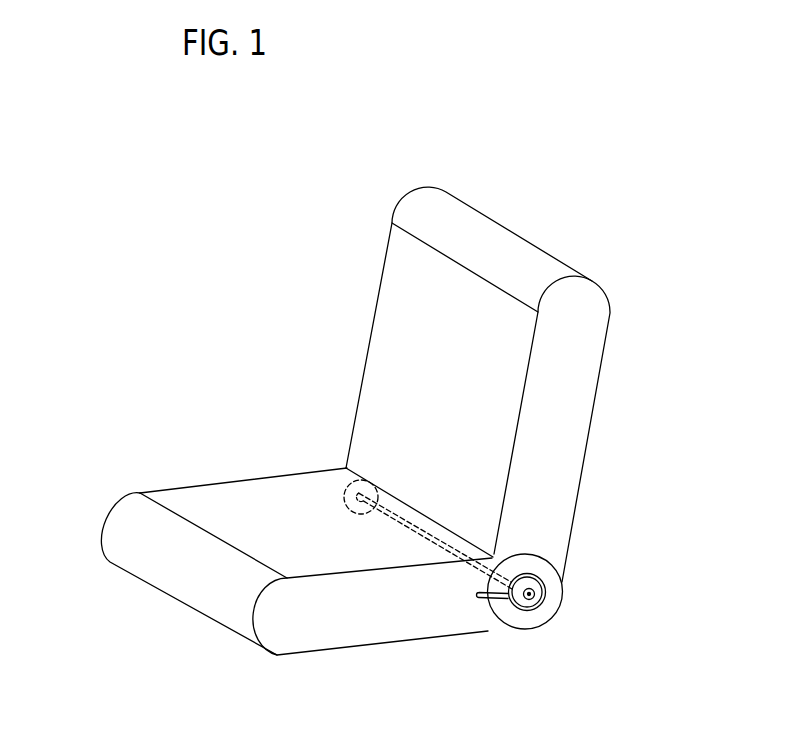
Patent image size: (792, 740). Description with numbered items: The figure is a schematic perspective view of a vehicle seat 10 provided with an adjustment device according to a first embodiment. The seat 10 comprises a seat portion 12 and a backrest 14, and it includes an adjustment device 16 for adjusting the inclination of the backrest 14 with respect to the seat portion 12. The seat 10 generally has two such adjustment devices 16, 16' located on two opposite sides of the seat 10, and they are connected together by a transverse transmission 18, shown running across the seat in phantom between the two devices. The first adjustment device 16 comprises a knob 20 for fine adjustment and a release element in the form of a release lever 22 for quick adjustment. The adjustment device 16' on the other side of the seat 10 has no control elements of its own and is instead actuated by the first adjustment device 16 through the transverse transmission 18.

The seat 10 is at (710, 247).
The seat portion 12 is at (231, 478).
The backrest 14 is at (375, 297).
The adjustment device 16 is at (565, 561).
The adjustment device 16' is at (330, 517).
The transverse transmission 18 is at (420, 520).
The knob 20 is at (544, 582).
The release lever 22 is at (477, 598).